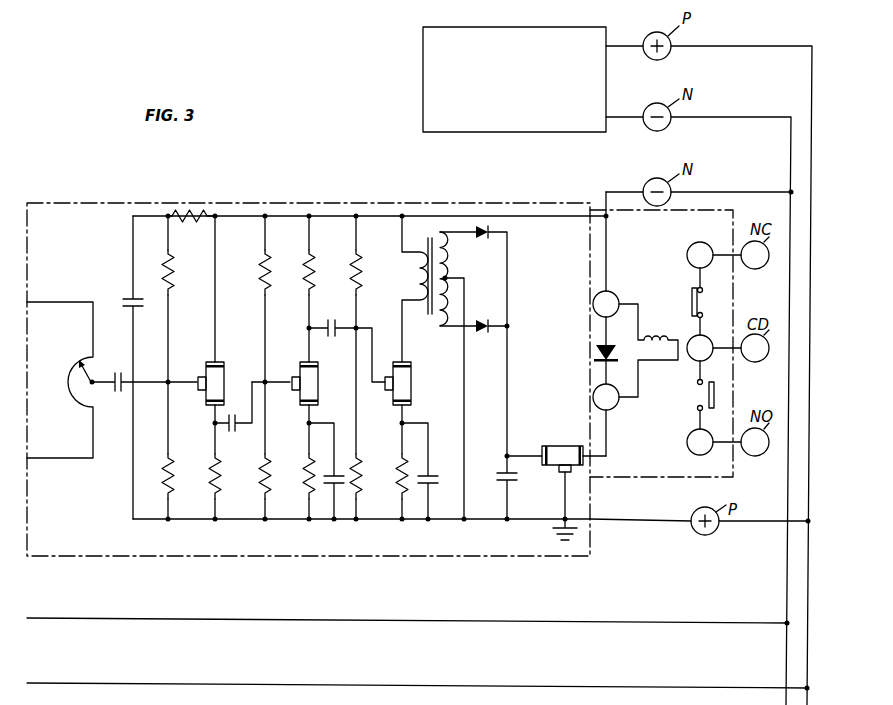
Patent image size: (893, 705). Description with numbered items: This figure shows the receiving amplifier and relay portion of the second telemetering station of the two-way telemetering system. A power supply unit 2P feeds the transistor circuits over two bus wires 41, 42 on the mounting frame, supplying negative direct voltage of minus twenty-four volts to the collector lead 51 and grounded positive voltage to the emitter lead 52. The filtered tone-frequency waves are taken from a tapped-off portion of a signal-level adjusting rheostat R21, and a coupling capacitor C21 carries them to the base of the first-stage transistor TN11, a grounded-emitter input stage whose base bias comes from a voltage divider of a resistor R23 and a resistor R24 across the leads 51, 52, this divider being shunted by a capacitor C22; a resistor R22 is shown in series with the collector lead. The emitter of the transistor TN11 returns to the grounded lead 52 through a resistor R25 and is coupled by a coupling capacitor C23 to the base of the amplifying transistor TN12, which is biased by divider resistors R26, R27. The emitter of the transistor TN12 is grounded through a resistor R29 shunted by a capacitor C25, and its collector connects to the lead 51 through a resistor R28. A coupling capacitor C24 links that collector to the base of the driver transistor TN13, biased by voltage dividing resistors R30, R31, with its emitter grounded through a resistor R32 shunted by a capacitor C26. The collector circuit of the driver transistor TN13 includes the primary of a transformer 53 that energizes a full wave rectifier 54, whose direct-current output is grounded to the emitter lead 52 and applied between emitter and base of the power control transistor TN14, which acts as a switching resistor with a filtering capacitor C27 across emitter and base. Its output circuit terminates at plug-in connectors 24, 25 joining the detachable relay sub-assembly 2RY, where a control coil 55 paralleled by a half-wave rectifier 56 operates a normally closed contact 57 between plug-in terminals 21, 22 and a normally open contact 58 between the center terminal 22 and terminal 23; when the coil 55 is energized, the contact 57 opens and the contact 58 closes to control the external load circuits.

The power supply unit 2P is at (527, 86).
The bus wire 41 is at (791, 146).
The bus wire 42 is at (812, 63).
The collector lead 51 is at (538, 216).
The emitter lead 52 is at (238, 520).
The transformer 53 is at (428, 240).
The full wave rectifier 54 is at (497, 290).
The control coil 55 is at (656, 336).
The half-wave rectifier 56 is at (595, 353).
The normally closed contact 57 is at (692, 298).
The normally open contact 58 is at (714, 395).
The relay sub-assembly 2RY is at (633, 478).
The plug-in terminal 21 is at (714, 255).
The center plug-in terminal 22 is at (714, 348).
The plug-in terminal 23 is at (714, 442).
The plug-in connector 24 is at (606, 268).
The plug-in connector 25 is at (606, 408).
The signal-level adjusting rheostat R21 is at (80, 393).
The resistor R22 is at (193, 210).
The resistor R23 is at (171, 263).
The resistor R24 is at (162, 477).
The resistor R25 is at (214, 486).
The resistor R26 is at (263, 262).
The resistor R27 is at (260, 477).
The resistor R28 is at (308, 262).
The resistor R29 is at (305, 478).
The voltage dividing resistor R30 is at (355, 262).
The voltage dividing resistor R31 is at (362, 472).
The resistor R32 is at (395, 485).
The coupling capacitor C21 is at (118, 395).
The capacitor C22 is at (124, 303).
The coupling capacitor C23 is at (233, 433).
The coupling capacitor C24 is at (333, 315).
The capacitor C25 is at (324, 486).
The capacitor C26 is at (445, 480).
The filtering capacitor C27 is at (520, 480).
The first-stage transistor TN11 is at (224, 362).
The amplifying transistor TN12 is at (318, 393).
The driver transistor TN13 is at (411, 370).
The power control transistor TN14 is at (570, 446).